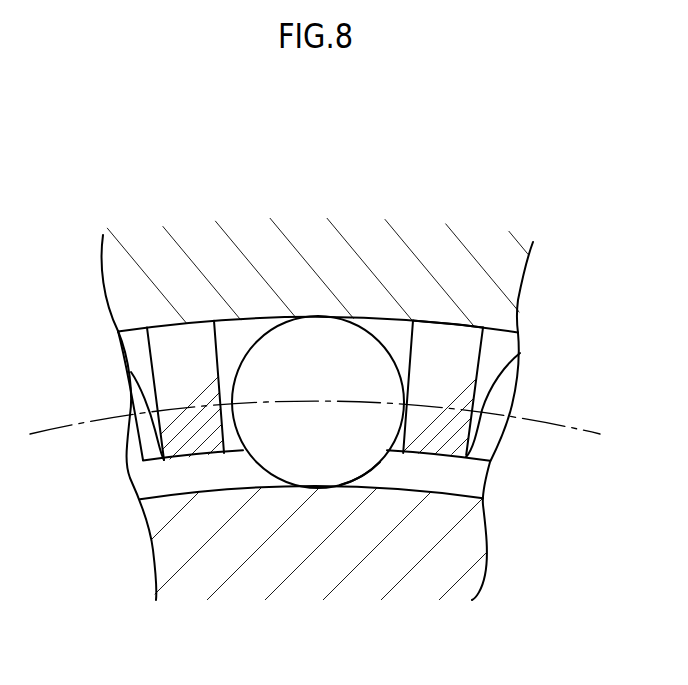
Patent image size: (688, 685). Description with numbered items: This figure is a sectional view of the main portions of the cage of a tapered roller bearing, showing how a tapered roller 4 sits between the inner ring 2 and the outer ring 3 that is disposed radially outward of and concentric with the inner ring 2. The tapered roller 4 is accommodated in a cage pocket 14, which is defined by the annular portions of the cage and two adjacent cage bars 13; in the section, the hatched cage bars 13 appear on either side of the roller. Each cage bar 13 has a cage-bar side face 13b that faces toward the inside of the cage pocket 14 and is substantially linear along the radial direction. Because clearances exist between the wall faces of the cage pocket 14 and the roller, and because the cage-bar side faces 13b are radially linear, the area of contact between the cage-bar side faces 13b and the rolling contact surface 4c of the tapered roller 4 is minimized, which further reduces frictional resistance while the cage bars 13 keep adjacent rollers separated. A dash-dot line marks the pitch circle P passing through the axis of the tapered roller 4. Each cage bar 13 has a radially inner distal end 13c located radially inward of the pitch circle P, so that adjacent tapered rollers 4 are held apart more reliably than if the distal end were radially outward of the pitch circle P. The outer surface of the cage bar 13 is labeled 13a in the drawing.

The inner ring 2 is at (430, 545).
The outer ring 3 is at (503, 253).
The tapered roller 4 is at (319, 462).
The rolling contact surface 4c is at (373, 468).
The cage bar 13 is at (195, 348).
The outer peripheral surface of cage 13a is at (470, 320).
The cage-bar side face 13b is at (222, 352).
The radially inner distal end 13c is at (190, 457).
The cage pocket 14 is at (256, 490).
The pitch circle P is at (83, 418).